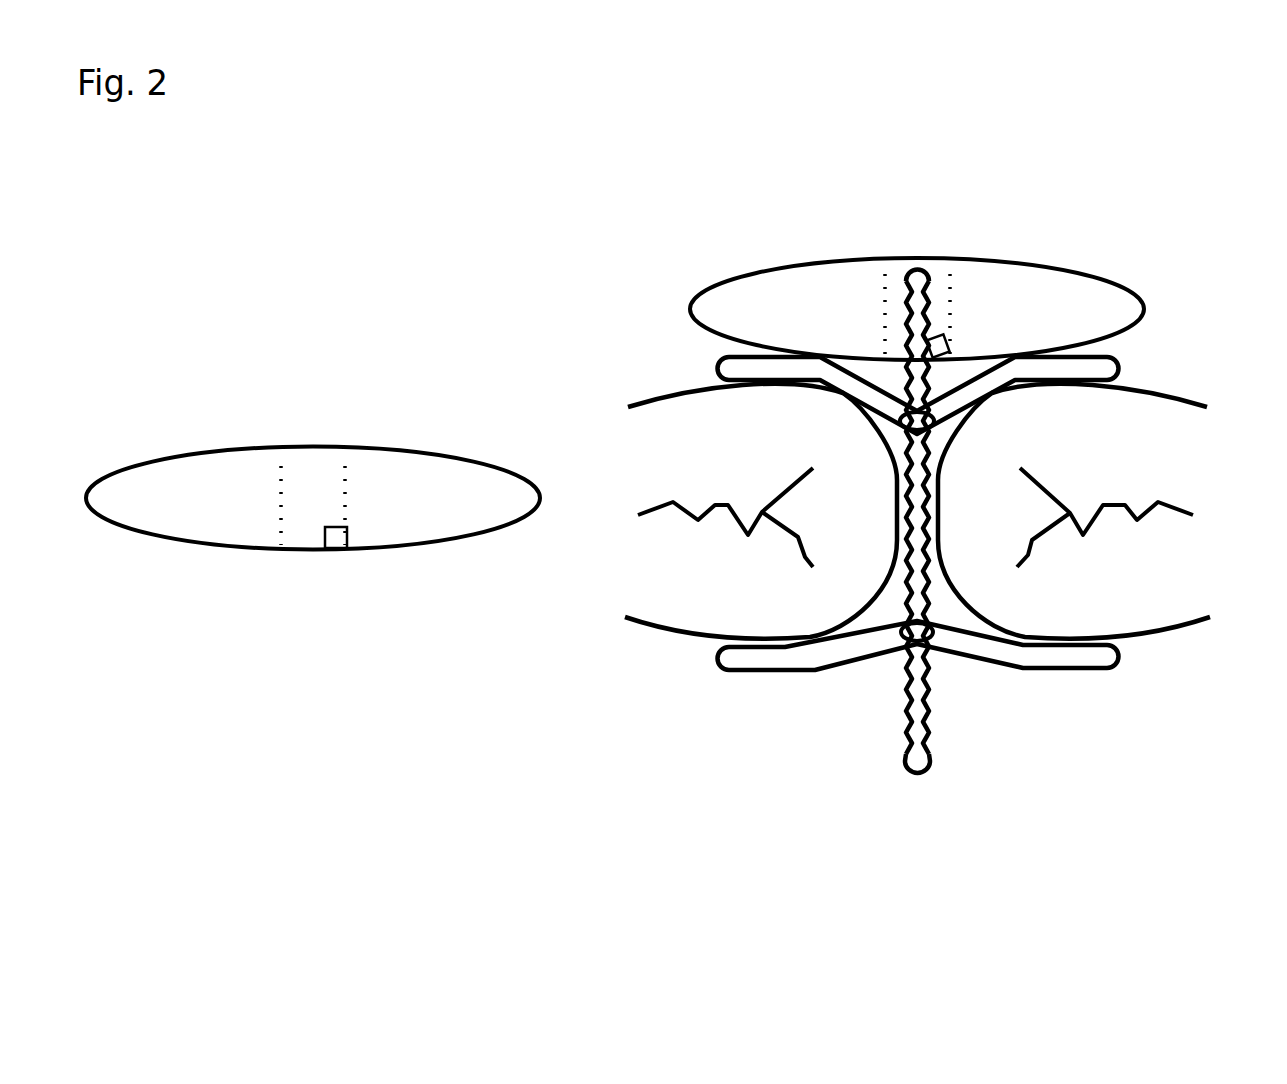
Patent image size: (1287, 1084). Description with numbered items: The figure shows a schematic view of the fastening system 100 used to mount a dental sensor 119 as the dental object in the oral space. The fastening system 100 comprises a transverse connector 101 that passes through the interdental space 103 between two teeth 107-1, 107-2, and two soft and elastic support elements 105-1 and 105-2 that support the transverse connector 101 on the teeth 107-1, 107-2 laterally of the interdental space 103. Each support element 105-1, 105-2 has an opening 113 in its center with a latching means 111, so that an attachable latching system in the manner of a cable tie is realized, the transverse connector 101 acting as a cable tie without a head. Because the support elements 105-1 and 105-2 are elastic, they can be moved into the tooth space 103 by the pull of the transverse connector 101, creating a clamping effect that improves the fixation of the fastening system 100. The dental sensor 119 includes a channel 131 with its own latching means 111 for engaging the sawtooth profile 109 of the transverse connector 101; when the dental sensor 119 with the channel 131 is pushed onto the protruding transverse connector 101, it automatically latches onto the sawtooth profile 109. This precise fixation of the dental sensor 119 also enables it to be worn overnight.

The fastening system 100 is at (1032, 218).
The transverse connector 101 is at (912, 780).
The interdental space 103 is at (933, 523).
The first support element 105-1 is at (848, 652).
The second support element 105-2 is at (753, 363).
The first tooth 107-1 is at (777, 590).
The second tooth 107-2 is at (1140, 593).
The sawtooth profile 109 is at (930, 583).
The latching means 111 is at (335, 550).
The opening 113 is at (933, 640).
The dental sensor 119 is at (180, 497).
The channel 131 is at (303, 495).